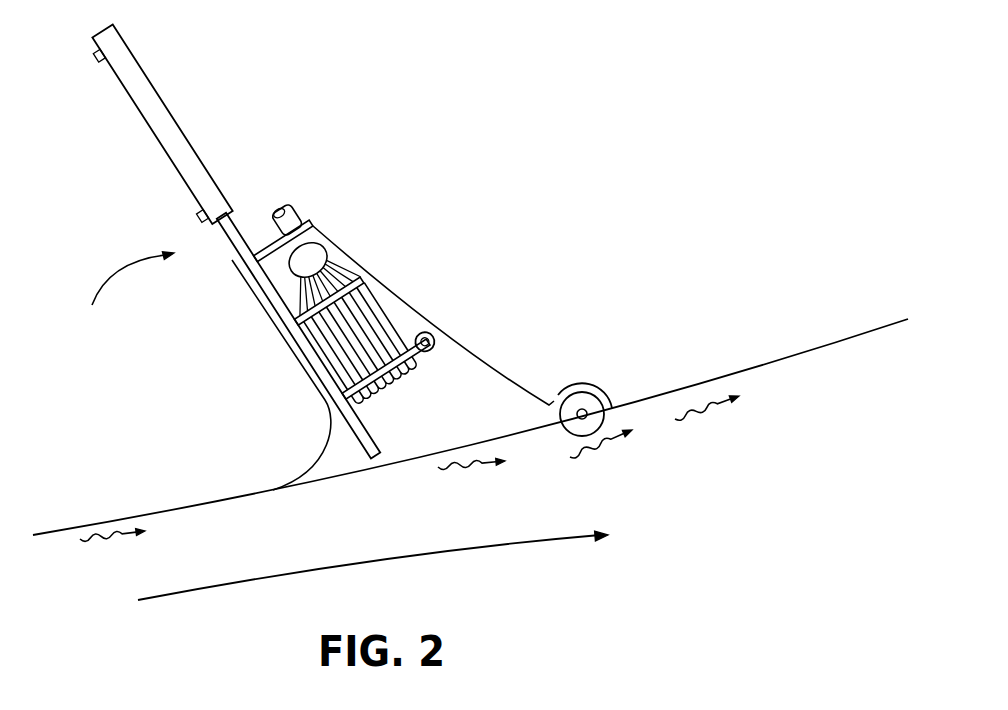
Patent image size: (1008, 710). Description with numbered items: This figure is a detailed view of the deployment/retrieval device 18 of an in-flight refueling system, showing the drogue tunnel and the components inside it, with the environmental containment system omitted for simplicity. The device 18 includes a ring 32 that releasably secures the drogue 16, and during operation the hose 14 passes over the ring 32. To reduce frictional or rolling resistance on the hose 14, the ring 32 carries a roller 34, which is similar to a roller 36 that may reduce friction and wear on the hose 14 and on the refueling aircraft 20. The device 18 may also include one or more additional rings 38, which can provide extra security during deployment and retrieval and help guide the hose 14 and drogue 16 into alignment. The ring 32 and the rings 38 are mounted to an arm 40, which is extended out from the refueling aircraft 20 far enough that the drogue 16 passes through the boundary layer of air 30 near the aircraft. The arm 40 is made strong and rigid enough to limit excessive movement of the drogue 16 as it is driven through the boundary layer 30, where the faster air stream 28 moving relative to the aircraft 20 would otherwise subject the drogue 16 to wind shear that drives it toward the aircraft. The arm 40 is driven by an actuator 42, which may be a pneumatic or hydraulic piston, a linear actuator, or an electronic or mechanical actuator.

The hose 14 is at (292, 220).
The drogue 16 is at (380, 323).
The deployment/retrieval device 18 is at (124, 292).
The refueling aircraft 20 is at (853, 342).
The air stream 28 is at (502, 548).
The boundary layer of air 30 is at (697, 413).
The ring 32 is at (427, 369).
The roller 34 is at (430, 328).
The roller 36 is at (592, 390).
The additional rings 38 is at (363, 283).
The arm 40 is at (310, 357).
The actuator 42 is at (142, 122).